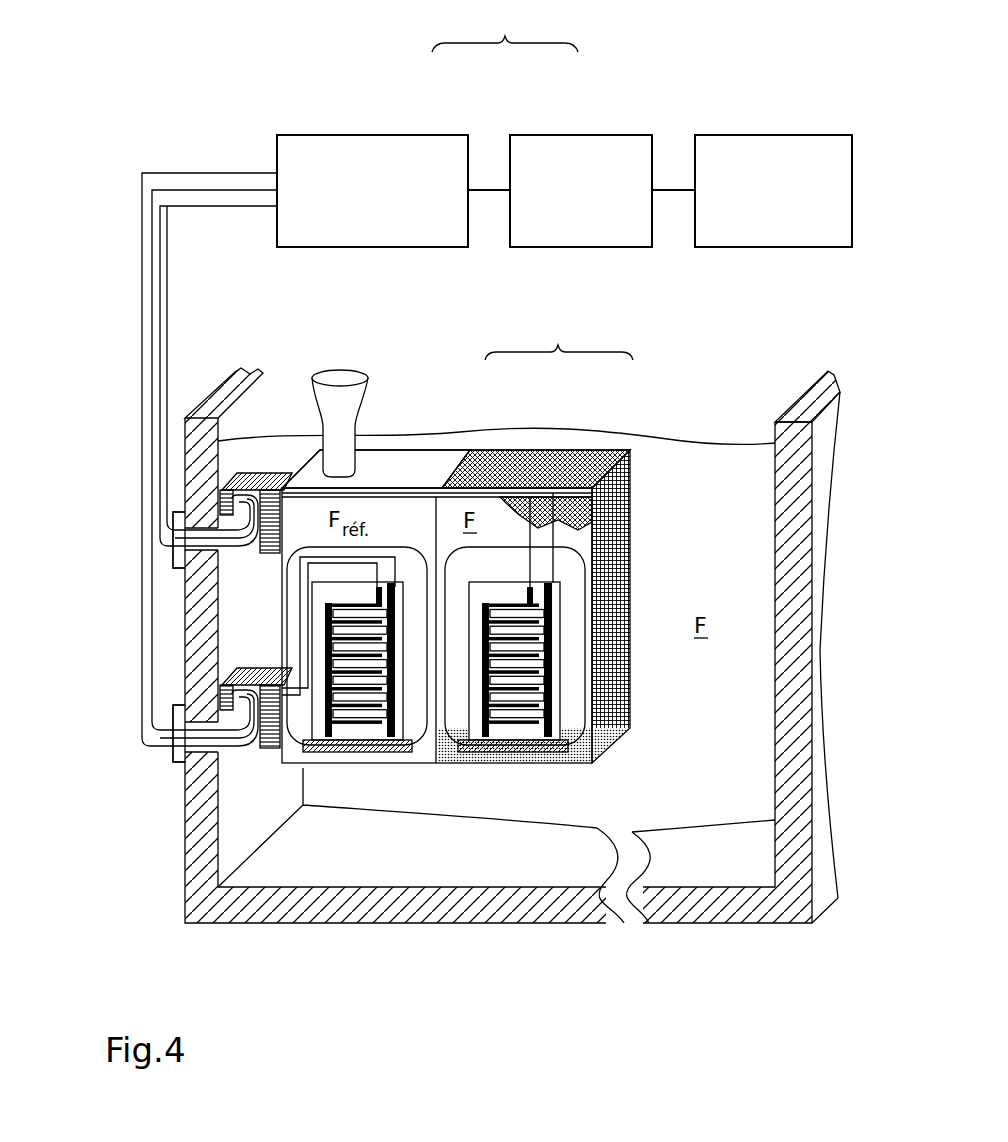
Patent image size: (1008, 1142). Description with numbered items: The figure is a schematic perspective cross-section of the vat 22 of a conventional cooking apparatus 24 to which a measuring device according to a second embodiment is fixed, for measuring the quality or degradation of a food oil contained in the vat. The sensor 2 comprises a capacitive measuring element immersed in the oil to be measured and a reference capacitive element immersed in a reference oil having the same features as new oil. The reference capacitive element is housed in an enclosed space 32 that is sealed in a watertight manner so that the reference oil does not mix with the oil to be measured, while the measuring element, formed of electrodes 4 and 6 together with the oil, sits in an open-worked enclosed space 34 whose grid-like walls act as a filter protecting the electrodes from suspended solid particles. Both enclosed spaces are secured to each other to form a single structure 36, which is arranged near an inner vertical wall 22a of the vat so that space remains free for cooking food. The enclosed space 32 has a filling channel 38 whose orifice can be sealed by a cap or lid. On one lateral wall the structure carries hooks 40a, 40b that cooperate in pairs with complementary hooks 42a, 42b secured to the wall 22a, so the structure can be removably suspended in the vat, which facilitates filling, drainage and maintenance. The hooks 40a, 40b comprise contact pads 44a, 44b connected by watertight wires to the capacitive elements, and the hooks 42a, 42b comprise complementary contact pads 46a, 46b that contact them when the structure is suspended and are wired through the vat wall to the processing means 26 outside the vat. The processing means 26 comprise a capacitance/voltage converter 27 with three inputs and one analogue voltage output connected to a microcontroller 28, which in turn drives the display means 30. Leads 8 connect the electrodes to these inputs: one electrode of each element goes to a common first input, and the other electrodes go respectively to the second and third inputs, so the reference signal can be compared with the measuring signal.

The sensor 2 is at (381, 416).
The second electrode 4 is at (415, 712).
The first electrode 6 is at (578, 752).
The electrode connection leads 8 is at (573, 577).
The vat 22 is at (826, 490).
The inner vertical wall 22a is at (192, 870).
The cooking apparatus 24 is at (855, 395).
The processing means 26 is at (505, 29).
The capacitance/voltage converter 27 is at (437, 135).
The microcontroller 28 is at (562, 135).
The display means 30 is at (738, 135).
The enclosed space 32 is at (412, 465).
The open-worked enclosed space 34 is at (557, 468).
The structure 36 is at (559, 338).
The filling channel 38 is at (308, 400).
The hook 40a is at (222, 470).
The hook 40b is at (222, 667).
The complementary hook 42a is at (232, 562).
The complementary hook 42b is at (228, 760).
The contact pad 44a is at (258, 500).
The contact pad 44b is at (258, 692).
The complementary contact pad 46a is at (242, 540).
The complementary contact pad 46b is at (240, 747).